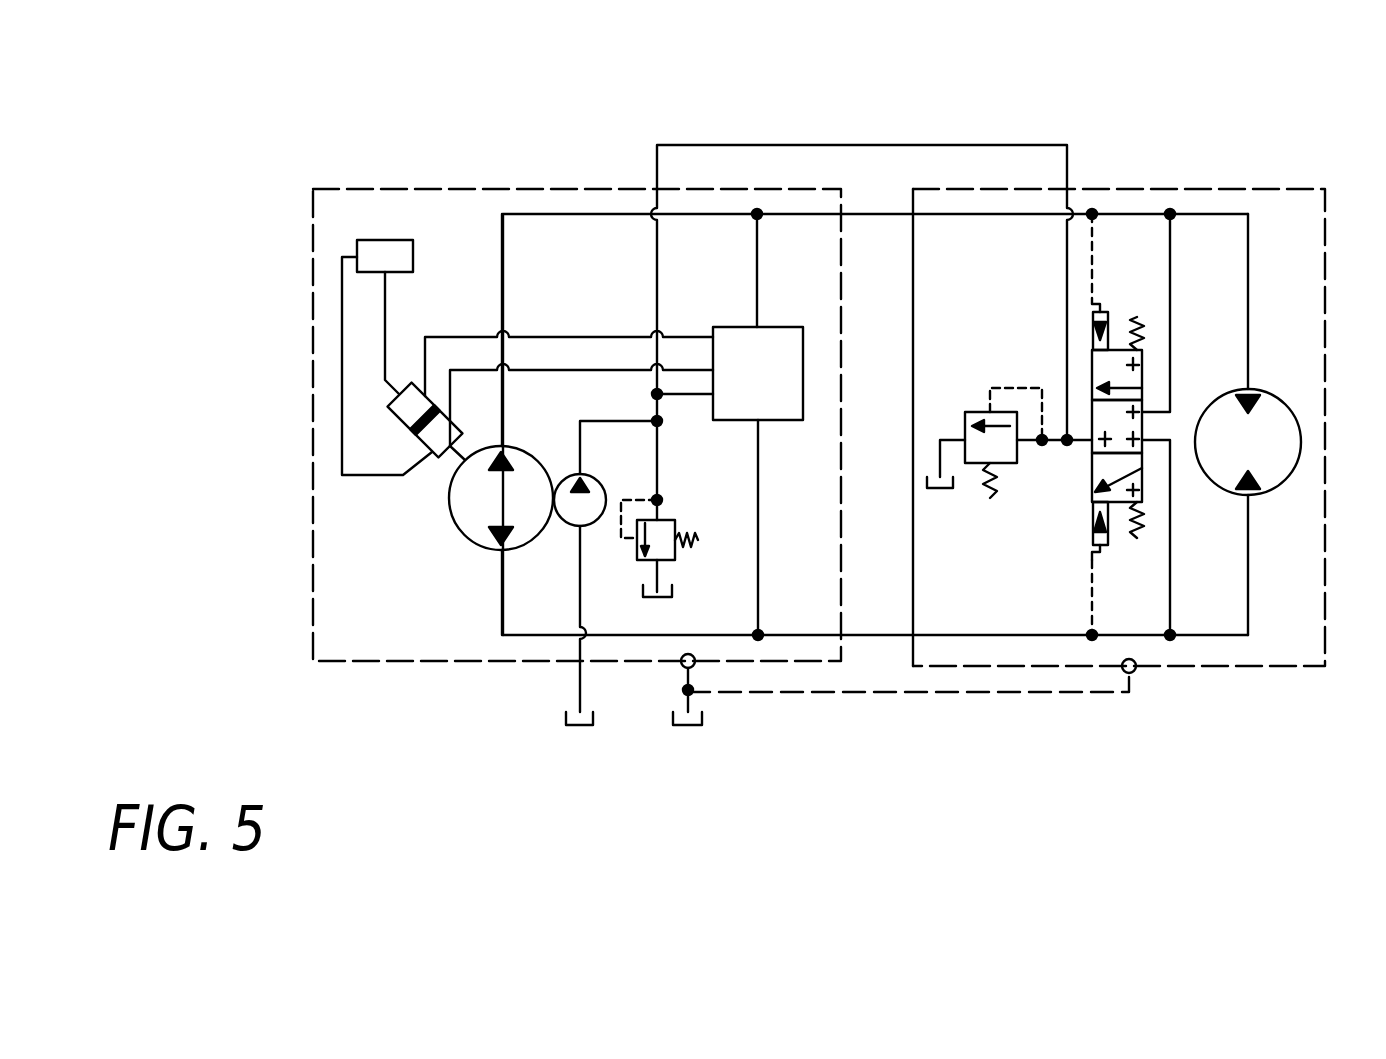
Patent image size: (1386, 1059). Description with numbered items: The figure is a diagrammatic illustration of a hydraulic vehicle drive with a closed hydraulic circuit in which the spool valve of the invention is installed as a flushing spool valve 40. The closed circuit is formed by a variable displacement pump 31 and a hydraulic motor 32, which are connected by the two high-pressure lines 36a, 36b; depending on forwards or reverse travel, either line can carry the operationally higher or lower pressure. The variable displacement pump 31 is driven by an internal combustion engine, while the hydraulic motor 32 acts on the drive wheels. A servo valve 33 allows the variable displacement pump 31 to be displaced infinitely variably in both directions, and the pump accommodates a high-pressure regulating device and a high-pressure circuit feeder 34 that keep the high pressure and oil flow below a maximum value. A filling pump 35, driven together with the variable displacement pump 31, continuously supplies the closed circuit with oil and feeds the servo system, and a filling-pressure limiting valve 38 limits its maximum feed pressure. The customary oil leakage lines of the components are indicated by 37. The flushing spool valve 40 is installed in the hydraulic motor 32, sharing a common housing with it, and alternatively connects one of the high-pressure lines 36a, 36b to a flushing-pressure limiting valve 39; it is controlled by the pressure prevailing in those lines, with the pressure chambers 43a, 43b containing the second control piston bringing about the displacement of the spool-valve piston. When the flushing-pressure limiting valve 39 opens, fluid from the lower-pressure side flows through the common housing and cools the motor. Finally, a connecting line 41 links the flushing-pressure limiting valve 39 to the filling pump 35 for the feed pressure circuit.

The variable displacement pump 31 is at (465, 540).
The hydraulic motor 32 is at (1275, 485).
The servo valve 33 is at (399, 240).
The high-pressure circuit feeder 34 is at (737, 327).
The filling pump 35 is at (568, 522).
The high-pressure line 36a is at (887, 635).
The high-pressure line 36b is at (869, 214).
The oil leakage line 37 is at (688, 690).
The filling-pressure limiting valve 38 is at (637, 557).
The flushing-pressure limiting valve 39 is at (1010, 465).
The flushing spool valve 40 is at (1145, 490).
The connecting line 41 is at (1012, 145).
The pressure chamber 43a is at (1108, 313).
The pressure chamber 43b is at (1107, 545).